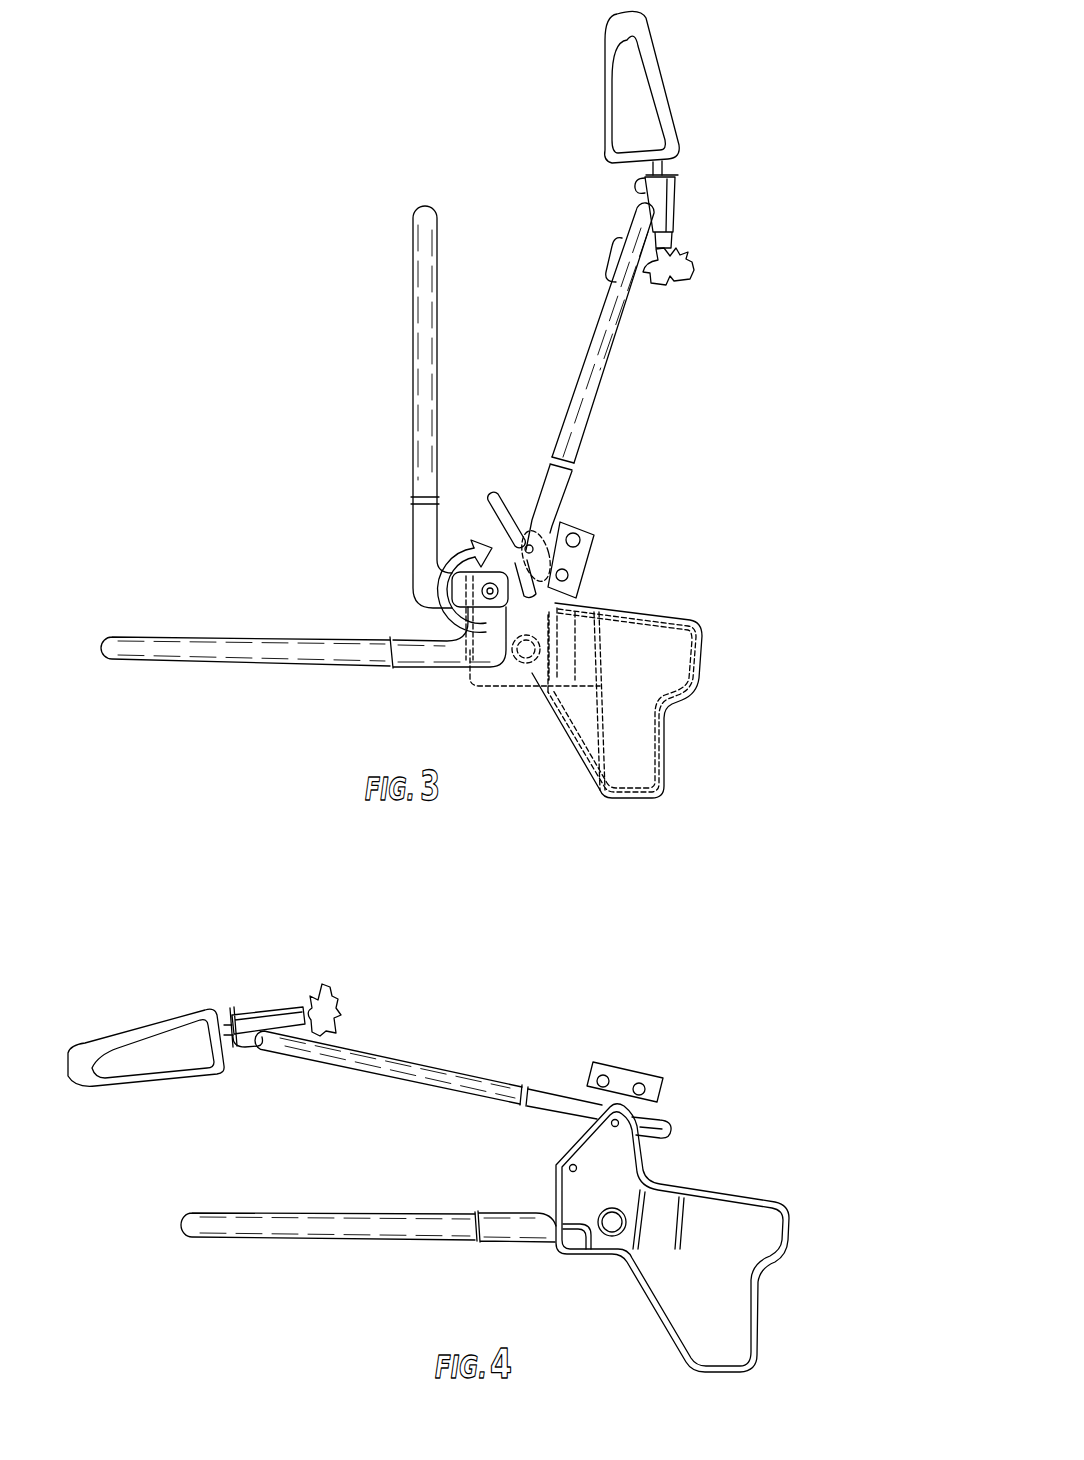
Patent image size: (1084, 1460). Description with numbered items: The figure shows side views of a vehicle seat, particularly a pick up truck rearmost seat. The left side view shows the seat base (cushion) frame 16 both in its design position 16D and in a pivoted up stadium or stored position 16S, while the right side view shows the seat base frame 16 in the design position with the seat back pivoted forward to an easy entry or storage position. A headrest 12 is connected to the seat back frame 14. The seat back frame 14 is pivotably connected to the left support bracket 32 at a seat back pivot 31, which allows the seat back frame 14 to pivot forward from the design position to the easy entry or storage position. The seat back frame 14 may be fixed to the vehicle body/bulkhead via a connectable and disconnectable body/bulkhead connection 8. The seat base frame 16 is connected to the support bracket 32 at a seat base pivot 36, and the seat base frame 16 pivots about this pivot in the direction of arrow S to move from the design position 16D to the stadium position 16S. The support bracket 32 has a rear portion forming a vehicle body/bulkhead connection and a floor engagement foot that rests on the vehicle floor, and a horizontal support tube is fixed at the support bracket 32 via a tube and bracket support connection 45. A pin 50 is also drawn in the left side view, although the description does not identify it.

In FIG. 3, the body/bulkhead connection 8 is at (693, 276).
In FIG. 4, the body/bulkhead connection 8 is at (337, 1000).
In FIG. 3, the headrest 12 is at (650, 90).
In FIG. 4, the headrest 12 is at (175, 1053).
In FIG. 3, the seat back frame 14 is at (606, 357).
In FIG. 4, the seat back frame 14 is at (453, 1075).
In FIG. 4, the seat base frame 16 is at (297, 1218).
In FIG. 3, the stadium position of seat base frame 16S is at (418, 273).
In FIG. 3, the design position of seat base frame 16D is at (196, 645).
In FIG. 3, the left seat back pivot 31 is at (568, 578).
In FIG. 4, the left seat back pivot 31 is at (618, 1126).
In FIG. 3, the left support bracket 32 is at (666, 661).
In FIG. 4, the left support bracket 32 is at (763, 1230).
In FIG. 4, the left side seat base pivot 36 is at (571, 1165).
In FIG. 3, the tube and bracket support connection 45 is at (527, 666).
In FIG. 4, the tube and bracket support connection 45 is at (614, 1240).
In FIG. 3, the pin 50 is at (512, 513).
In FIG. 3, the arrow S is at (472, 556).